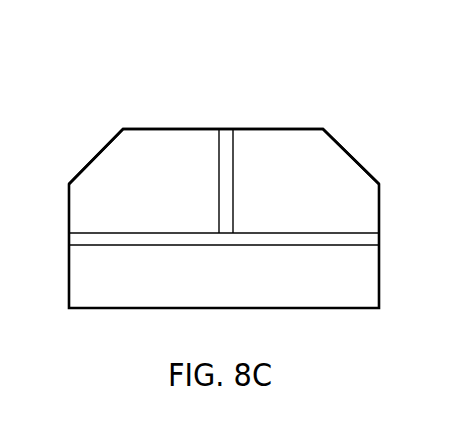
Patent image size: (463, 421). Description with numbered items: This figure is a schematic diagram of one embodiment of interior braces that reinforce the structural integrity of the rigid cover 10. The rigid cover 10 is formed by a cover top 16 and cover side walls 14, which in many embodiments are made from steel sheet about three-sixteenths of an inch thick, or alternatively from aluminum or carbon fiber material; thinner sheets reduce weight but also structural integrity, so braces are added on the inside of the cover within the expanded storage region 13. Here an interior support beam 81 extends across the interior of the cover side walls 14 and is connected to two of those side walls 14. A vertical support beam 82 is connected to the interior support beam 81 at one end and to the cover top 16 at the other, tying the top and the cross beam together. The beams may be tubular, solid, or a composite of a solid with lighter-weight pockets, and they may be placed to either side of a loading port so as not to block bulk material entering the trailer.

The rigid cover 10 is at (110, 80).
The expanded storage region 13 is at (296, 204).
The cover side walls 14 is at (69, 270).
The cover top 16 is at (108, 143).
The interior support beam 81 is at (90, 239).
The vertical support beam 82 is at (225, 148).